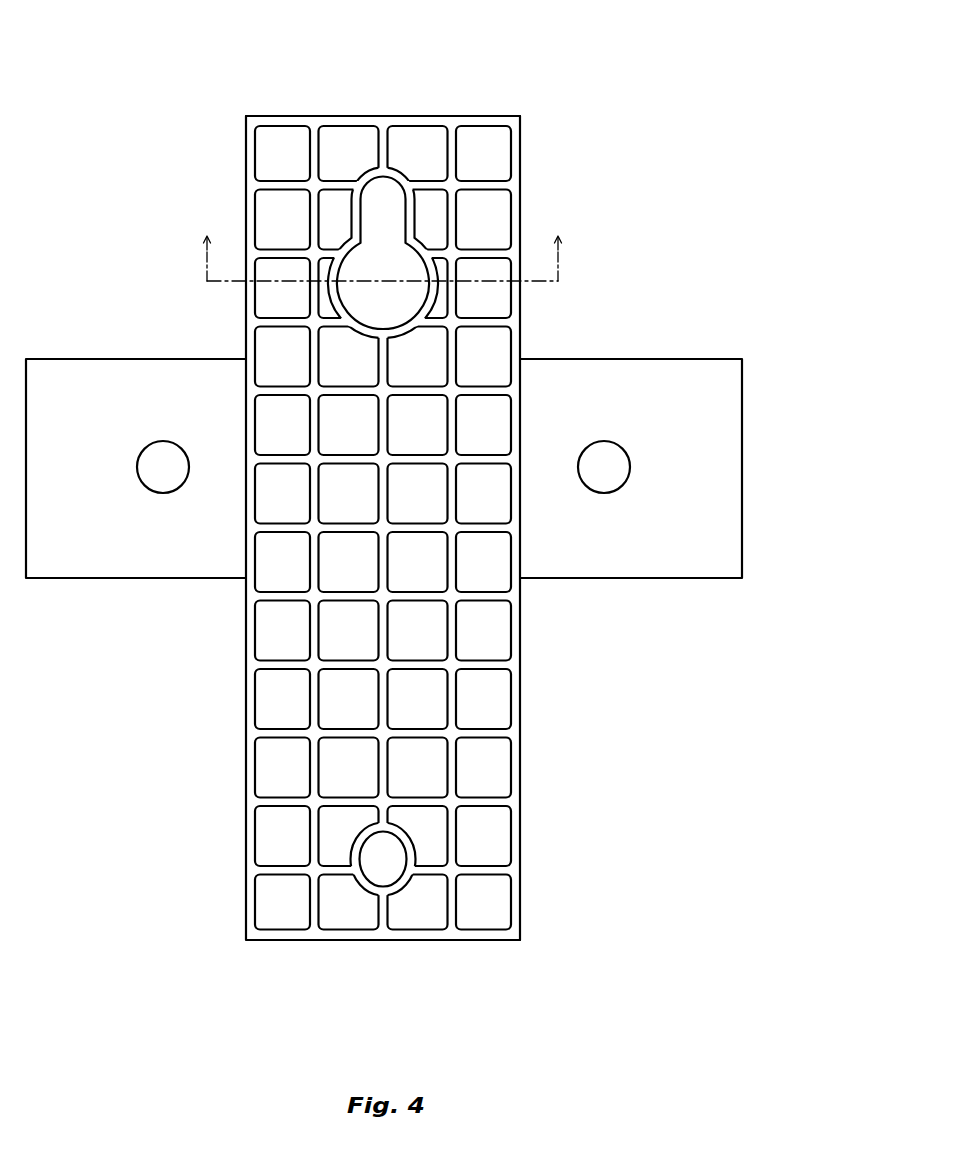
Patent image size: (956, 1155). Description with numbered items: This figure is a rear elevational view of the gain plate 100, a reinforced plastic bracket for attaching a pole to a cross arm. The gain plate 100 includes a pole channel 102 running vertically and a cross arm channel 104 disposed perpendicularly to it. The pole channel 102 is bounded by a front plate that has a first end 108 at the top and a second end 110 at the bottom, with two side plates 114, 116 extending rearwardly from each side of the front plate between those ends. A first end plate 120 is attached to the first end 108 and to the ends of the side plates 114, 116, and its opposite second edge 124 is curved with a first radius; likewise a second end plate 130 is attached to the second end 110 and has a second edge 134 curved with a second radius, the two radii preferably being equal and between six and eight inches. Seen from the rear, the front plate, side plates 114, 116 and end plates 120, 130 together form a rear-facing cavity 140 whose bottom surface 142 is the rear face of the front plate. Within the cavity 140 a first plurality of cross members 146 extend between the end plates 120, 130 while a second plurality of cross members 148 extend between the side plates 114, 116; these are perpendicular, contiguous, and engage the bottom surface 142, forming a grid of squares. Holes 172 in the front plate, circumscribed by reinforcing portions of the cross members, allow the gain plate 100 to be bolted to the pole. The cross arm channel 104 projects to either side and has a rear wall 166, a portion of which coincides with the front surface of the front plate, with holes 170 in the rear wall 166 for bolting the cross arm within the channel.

The gain plate 100 is at (640, 95).
The pole channel 102 is at (532, 797).
The cross arm channel 104 is at (758, 530).
The first end 108 is at (452, 105).
The second end 110 is at (243, 945).
The side plate 114 is at (522, 885).
The side plate 116 is at (247, 862).
The first end plate 120 is at (293, 116).
The second edge 124 is at (362, 126).
The second end plate 130 is at (354, 942).
The second edge 134 is at (447, 942).
The rear-facing cavity 140 is at (275, 701).
The bottom surface 142 is at (492, 340).
The first plurality of cross members 146 is at (452, 710).
The second plurality of cross members 148 is at (487, 803).
The rear wall 166 is at (84, 414).
The holes 170 is at (598, 494).
The holes 172 is at (410, 265).